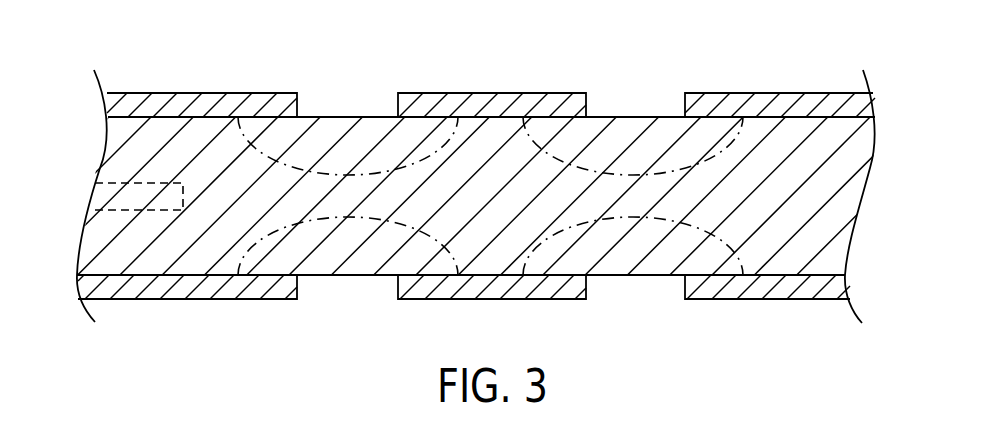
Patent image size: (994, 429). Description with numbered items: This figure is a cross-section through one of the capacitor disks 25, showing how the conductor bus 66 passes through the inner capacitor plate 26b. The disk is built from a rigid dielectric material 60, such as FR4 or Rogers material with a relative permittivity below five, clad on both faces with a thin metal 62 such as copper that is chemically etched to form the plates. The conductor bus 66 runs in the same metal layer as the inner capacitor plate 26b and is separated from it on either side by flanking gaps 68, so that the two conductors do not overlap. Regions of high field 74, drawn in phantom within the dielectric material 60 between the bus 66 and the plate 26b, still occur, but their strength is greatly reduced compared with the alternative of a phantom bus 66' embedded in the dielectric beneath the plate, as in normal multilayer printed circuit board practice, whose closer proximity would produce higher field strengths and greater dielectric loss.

The capacitor disks 25 is at (72, 94).
The inner capacitor plate 26b is at (170, 93).
The dielectric material 60 is at (840, 200).
The metal 62 is at (758, 93).
The conductor bus 66 is at (492, 198).
The phantom bus 66' is at (107, 182).
The gaps 68 is at (329, 96).
The regions of high field 74 is at (373, 217).